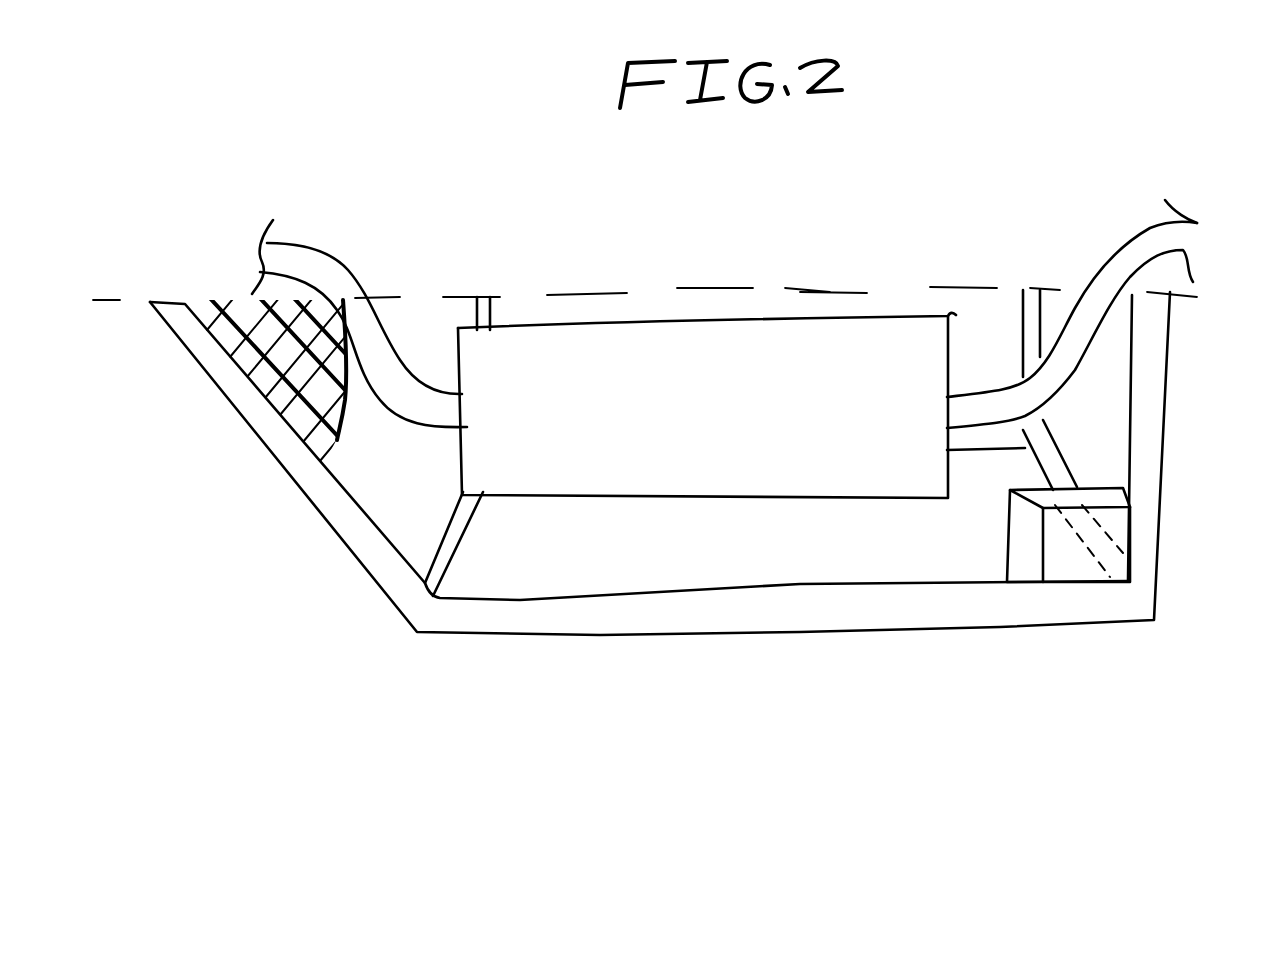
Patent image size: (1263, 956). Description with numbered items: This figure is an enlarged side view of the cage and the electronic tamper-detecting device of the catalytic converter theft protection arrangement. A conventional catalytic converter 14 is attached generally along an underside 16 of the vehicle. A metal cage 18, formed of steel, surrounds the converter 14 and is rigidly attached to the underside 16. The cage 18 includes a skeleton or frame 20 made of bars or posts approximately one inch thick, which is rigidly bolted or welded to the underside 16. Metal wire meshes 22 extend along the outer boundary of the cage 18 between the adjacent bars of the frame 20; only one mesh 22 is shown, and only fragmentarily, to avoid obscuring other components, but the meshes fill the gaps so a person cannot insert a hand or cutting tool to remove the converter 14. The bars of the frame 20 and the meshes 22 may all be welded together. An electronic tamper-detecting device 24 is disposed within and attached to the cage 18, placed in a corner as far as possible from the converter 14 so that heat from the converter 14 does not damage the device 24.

The catalytic converter 14 is at (752, 433).
The underside 16 is at (821, 292).
The metal cage 18 is at (518, 617).
The frame 20 is at (490, 313).
The metal wire mesh 22 is at (347, 423).
The electronic tamper-detecting device 24 is at (1027, 537).